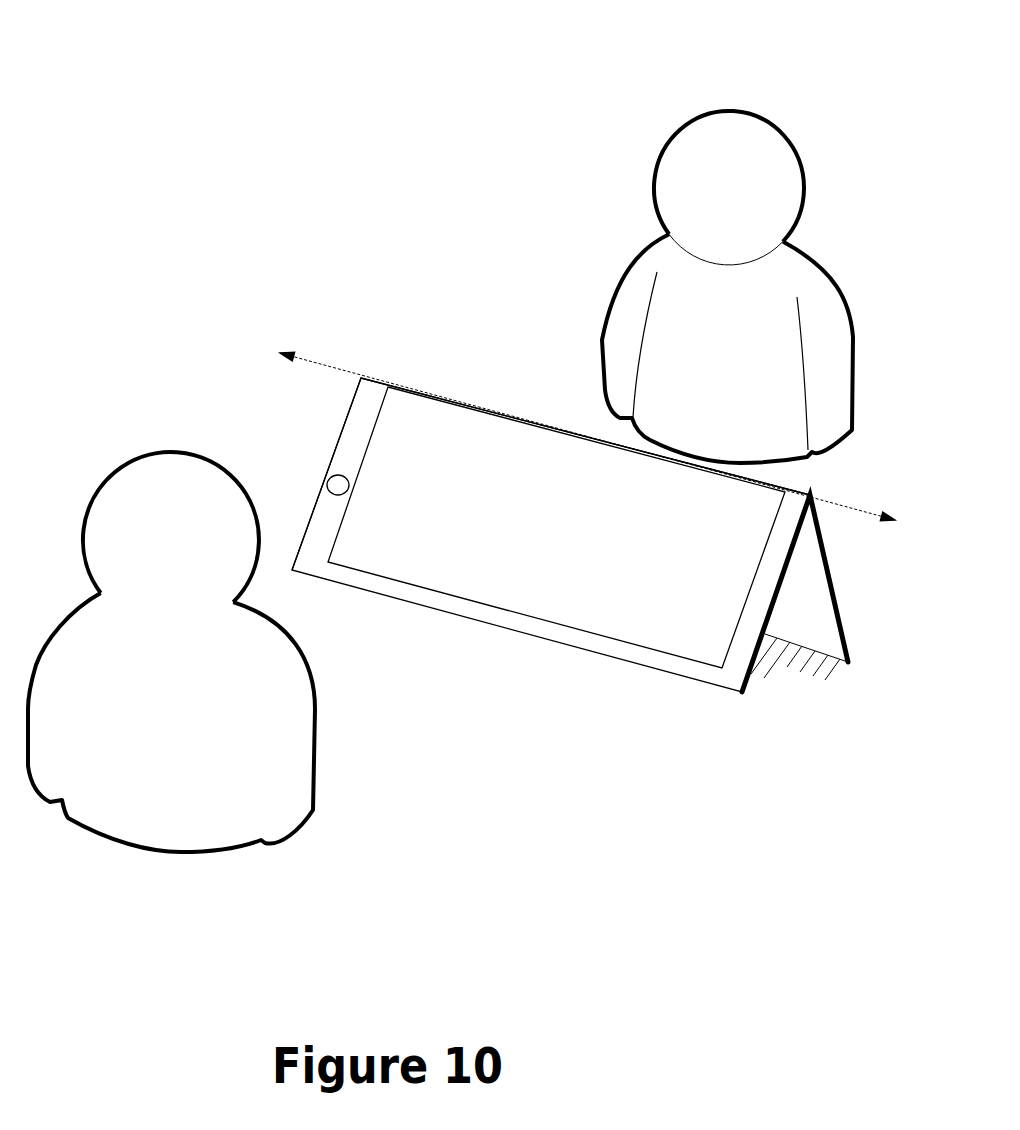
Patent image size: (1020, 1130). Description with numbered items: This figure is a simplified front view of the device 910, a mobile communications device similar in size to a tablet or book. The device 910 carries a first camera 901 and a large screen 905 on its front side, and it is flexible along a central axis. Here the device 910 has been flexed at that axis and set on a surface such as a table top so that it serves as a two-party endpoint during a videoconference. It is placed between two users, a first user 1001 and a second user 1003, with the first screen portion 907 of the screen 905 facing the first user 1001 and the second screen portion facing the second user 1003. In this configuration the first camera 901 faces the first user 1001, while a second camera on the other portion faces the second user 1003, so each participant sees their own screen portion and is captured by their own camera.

The first camera 901 is at (339, 474).
The large screen 905 is at (433, 597).
The first screen portion 907 is at (640, 606).
The device 910 is at (464, 326).
The first user 1001 is at (177, 462).
The second user 1003 is at (727, 123).